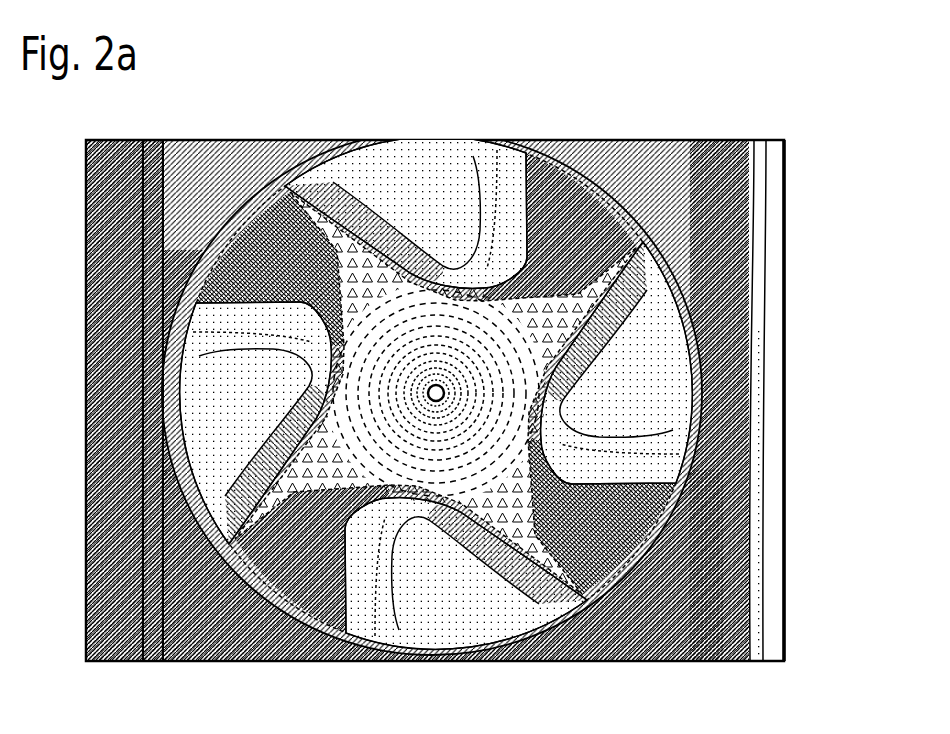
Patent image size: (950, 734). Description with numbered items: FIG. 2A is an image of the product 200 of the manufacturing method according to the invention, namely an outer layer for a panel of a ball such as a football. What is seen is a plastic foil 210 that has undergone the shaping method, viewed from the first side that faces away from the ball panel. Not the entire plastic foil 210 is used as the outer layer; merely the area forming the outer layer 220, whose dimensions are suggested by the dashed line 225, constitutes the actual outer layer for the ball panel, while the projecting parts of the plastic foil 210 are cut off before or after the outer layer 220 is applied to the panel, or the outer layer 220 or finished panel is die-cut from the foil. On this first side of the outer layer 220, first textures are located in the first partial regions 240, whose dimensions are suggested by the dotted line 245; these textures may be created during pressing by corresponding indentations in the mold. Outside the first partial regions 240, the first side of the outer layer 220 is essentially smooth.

The product 200 is at (705, 126).
The plastic foil 210 is at (277, 593).
The outer layer 220 is at (418, 300).
The dashed line 225 is at (337, 223).
The first partial regions 240 is at (565, 215).
The dotted line 245 is at (337, 307).